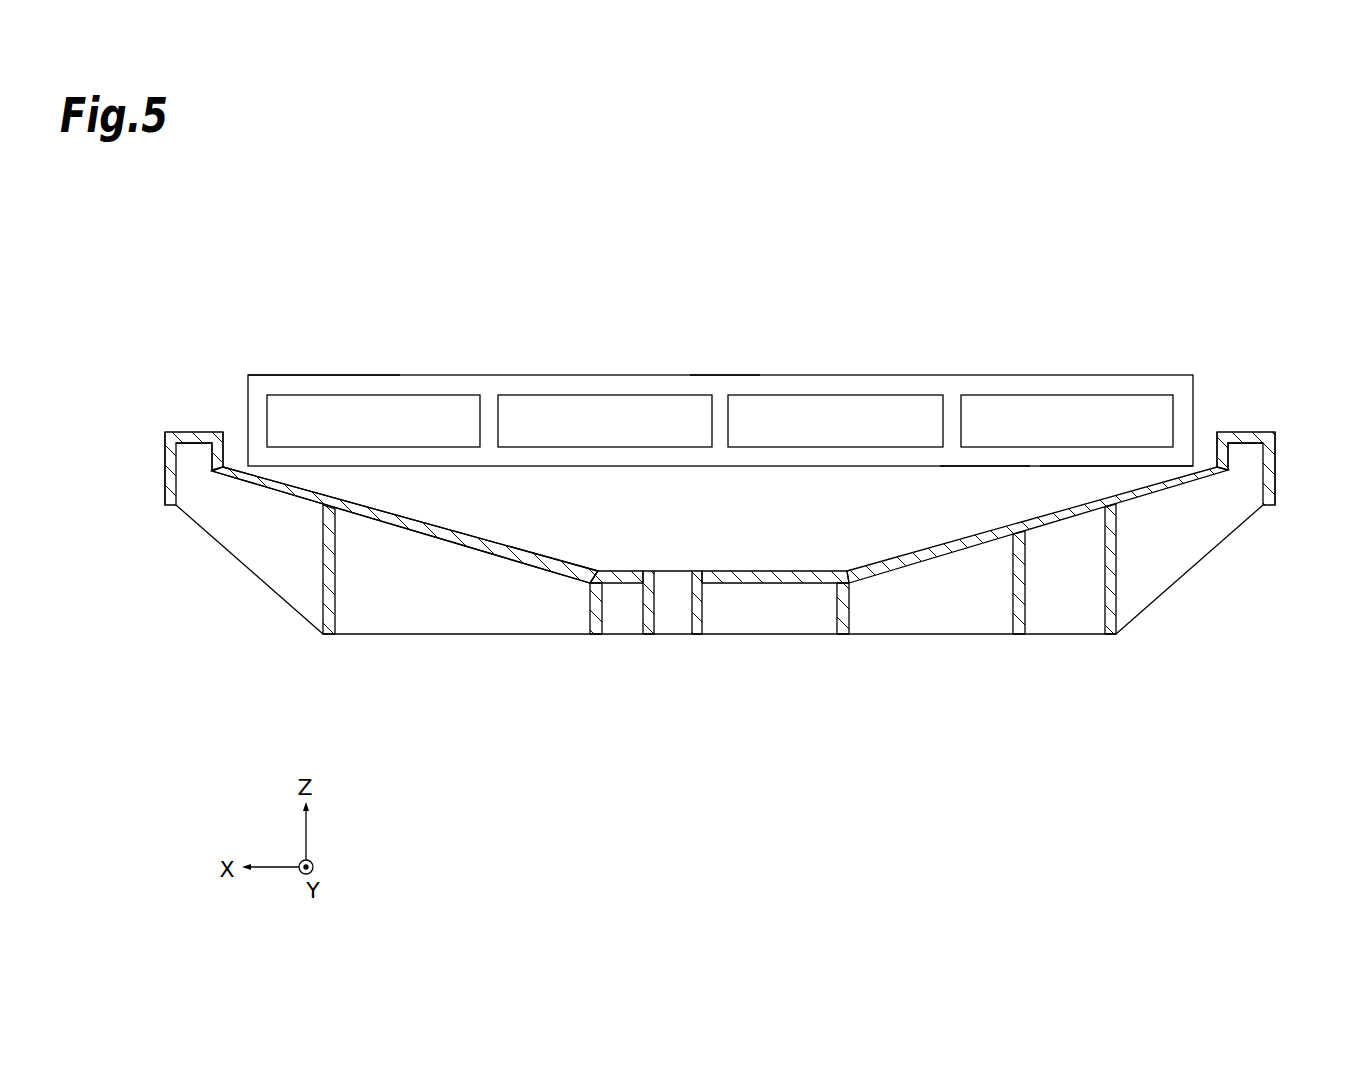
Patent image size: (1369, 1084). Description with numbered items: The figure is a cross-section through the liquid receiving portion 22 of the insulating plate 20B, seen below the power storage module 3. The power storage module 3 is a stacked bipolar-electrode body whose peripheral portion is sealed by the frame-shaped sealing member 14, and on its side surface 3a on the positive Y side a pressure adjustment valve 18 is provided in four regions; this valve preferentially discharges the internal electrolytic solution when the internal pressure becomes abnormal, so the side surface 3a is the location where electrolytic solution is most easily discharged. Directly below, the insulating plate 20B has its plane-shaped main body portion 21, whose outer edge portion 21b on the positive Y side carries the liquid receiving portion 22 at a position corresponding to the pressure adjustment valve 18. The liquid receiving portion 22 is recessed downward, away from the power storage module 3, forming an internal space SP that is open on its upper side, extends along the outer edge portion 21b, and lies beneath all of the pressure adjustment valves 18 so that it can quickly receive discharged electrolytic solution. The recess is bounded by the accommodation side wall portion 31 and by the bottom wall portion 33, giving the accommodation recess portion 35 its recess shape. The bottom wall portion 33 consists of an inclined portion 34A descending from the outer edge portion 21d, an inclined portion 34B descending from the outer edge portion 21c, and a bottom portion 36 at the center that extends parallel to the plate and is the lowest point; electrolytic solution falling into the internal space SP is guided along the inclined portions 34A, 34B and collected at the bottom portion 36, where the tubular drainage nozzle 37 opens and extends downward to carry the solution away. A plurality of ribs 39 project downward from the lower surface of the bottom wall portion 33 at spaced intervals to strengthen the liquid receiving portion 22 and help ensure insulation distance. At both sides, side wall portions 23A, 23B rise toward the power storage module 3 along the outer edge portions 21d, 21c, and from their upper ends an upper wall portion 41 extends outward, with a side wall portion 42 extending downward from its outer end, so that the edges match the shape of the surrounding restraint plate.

The power storage module 3 is at (776, 372).
The side surface 3a is at (721, 392).
The sealing member 14 is at (328, 372).
The pressure adjustment valve 18 is at (391, 412).
The internal space SP is at (662, 492).
The accommodation side wall portion 31 is at (917, 497).
The main body portion 21 is at (1099, 458).
The outer edge portion 21b is at (987, 457).
The outer edge portion 21c is at (1232, 470).
The outer edge portion 21d is at (209, 470).
The insulating plate 20B is at (713, 509).
The upper wall portion 41 is at (190, 432).
The side wall portion 42 is at (163, 465).
The side wall portion 23A is at (232, 445).
The side wall portion 23B is at (1205, 452).
The liquid receiving portion 22 is at (287, 606).
The bottom wall portion 33 is at (455, 530).
The inclined portion 34A is at (505, 559).
The inclined portion 34B is at (932, 558).
The accommodation recess portion 35 is at (595, 545).
The bottom portion 36 is at (820, 573).
The drainage nozzle 37 is at (635, 616).
The rib 39 is at (337, 613).